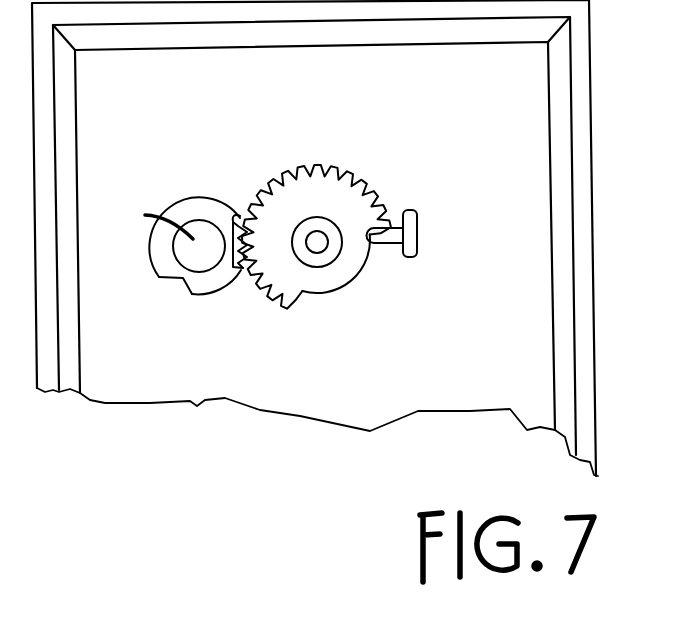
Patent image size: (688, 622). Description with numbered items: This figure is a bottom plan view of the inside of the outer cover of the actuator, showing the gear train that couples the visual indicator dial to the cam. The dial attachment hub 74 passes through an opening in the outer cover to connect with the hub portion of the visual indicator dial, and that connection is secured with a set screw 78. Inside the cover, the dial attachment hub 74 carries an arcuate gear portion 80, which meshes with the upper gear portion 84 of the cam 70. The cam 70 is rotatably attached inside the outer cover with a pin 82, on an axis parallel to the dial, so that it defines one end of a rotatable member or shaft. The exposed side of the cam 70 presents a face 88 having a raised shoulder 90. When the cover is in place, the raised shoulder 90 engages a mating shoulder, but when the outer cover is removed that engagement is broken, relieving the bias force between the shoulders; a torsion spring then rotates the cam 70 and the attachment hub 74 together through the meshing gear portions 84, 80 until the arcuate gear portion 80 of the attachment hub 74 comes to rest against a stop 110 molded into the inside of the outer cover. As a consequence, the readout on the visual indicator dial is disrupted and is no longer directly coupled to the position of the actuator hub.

The cam 70 is at (180, 200).
The dial attachment hub 74 is at (291, 270).
The set screw 78 is at (316, 222).
The arcuate gear portion 80 is at (363, 172).
The pin 82 is at (145, 215).
The upper gear portion 84 is at (243, 268).
The face 88 is at (203, 283).
The raised shoulder 90 is at (159, 278).
The stop 110 is at (418, 232).